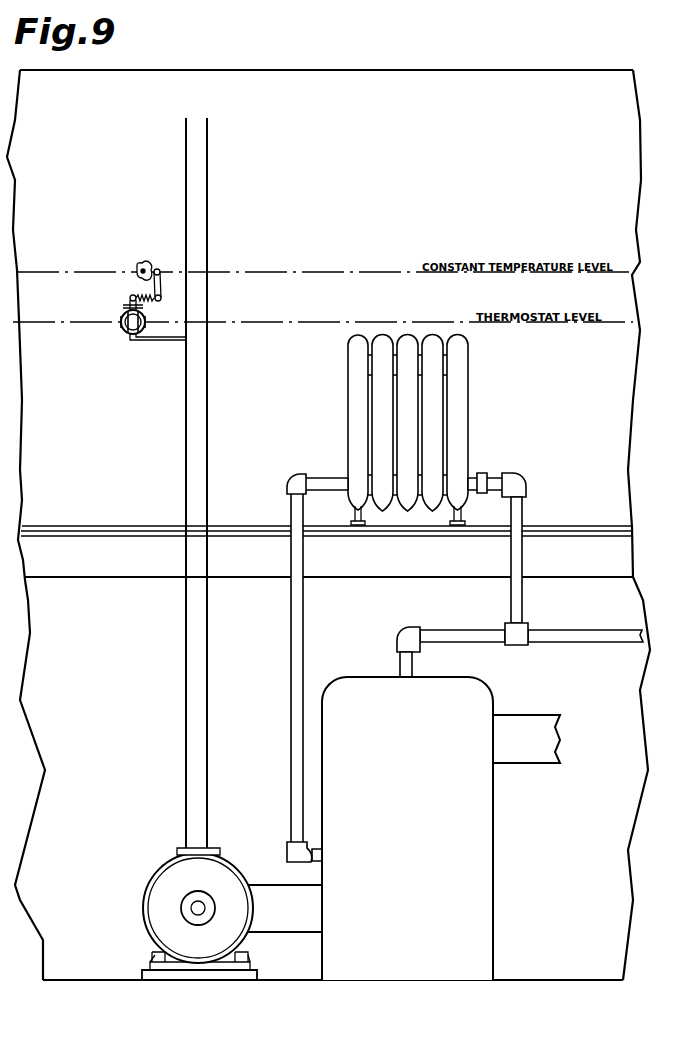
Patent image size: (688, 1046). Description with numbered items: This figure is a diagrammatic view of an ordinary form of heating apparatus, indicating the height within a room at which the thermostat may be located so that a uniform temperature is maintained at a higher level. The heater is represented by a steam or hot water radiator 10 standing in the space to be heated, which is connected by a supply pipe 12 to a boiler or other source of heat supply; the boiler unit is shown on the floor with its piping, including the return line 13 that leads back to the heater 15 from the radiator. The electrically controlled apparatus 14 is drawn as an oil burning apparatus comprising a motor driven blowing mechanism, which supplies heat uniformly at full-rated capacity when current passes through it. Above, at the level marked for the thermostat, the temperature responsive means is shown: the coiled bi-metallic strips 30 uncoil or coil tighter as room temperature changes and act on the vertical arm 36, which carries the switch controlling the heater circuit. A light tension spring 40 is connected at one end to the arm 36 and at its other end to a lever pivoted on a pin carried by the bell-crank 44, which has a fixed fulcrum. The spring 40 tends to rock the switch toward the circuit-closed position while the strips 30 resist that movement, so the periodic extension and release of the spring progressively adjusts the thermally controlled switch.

The radiator 10 is at (464, 427).
The supply pipe 12 is at (514, 602).
The supply pipe 13 is at (297, 651).
The electrically controlled apparatus 14 is at (214, 886).
The boiler tank 15 is at (419, 790).
The coiled bi-metallic strips 30 is at (147, 311).
The vertical arm 36 is at (130, 298).
The tension spring 40 is at (142, 296).
The bell-crank 44 is at (158, 269).